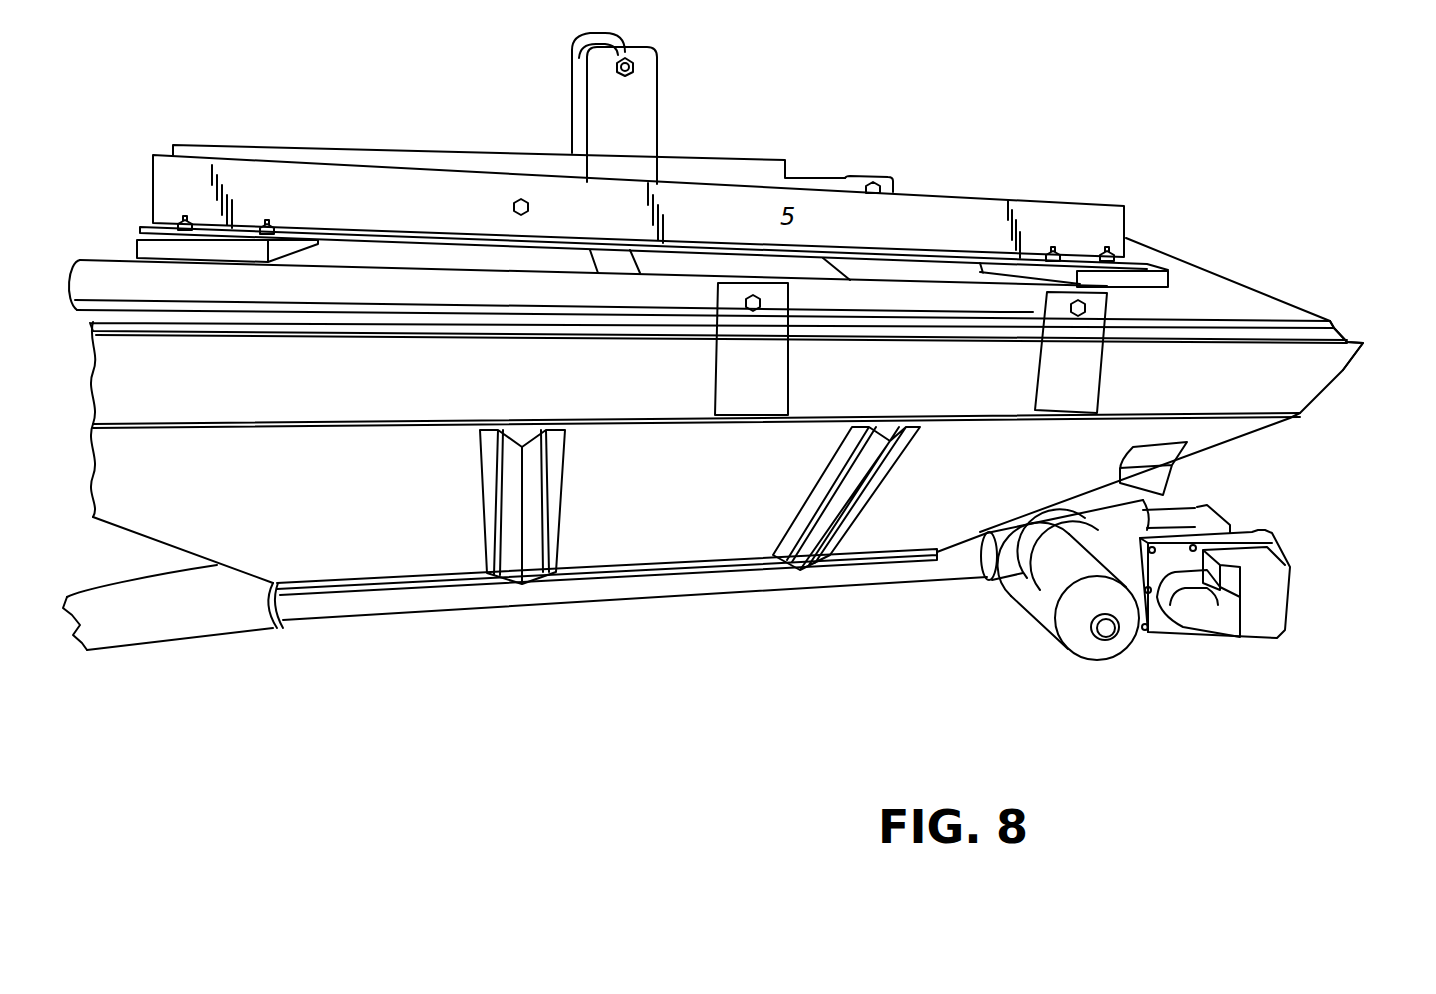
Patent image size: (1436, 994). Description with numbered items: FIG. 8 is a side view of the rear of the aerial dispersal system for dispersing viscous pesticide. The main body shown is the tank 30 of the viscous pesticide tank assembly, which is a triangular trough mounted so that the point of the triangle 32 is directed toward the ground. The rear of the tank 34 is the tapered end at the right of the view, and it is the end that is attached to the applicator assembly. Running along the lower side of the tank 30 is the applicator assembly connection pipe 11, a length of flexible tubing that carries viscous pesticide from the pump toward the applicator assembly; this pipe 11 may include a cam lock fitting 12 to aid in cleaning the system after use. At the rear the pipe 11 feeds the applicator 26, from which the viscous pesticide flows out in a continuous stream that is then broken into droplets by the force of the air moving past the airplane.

The applicator assembly connection pipe 11 is at (655, 590).
The cam lock fitting 12 is at (1087, 643).
The applicator 26 is at (1223, 520).
The tank 30 is at (697, 528).
The point of the triangle 32 is at (917, 562).
The rear of the tank 34 is at (1345, 360).